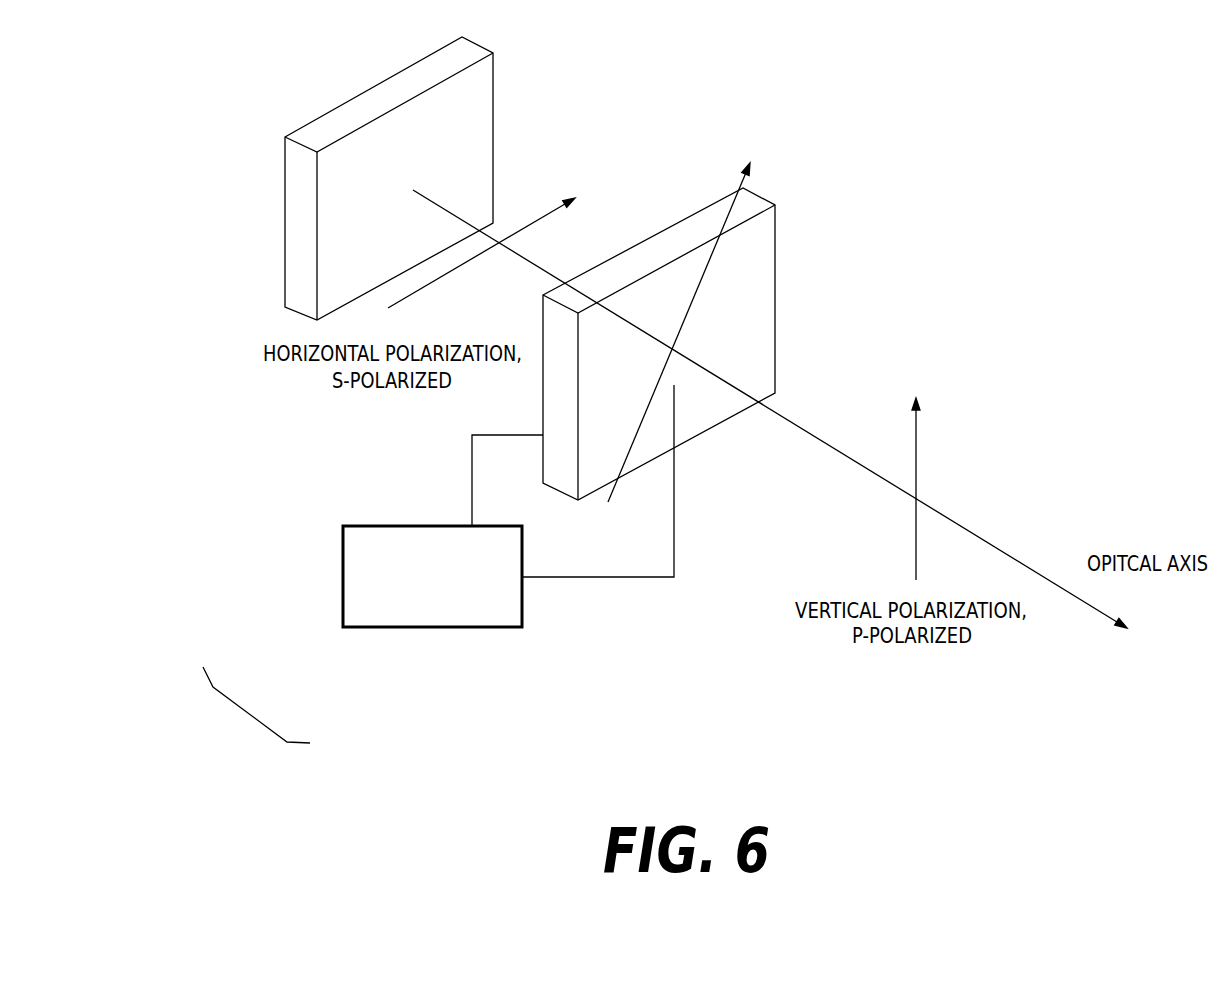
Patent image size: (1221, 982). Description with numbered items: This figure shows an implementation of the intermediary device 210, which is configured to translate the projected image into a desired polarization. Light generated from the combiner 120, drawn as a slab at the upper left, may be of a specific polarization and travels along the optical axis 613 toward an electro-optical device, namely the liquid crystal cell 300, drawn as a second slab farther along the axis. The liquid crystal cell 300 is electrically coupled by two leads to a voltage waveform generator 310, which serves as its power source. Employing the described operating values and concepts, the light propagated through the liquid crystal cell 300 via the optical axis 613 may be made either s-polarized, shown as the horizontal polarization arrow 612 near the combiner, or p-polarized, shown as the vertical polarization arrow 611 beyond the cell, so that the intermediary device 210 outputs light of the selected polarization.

The combiner 120 is at (493, 102).
The s-polarized (horizontal) light 612 is at (543, 215).
The liquid crystal cell 300 is at (760, 308).
The p-polarized (vertical) light 611 is at (918, 450).
The optical axis 613 is at (1093, 610).
The voltage waveform generator 310 is at (442, 628).
The intermediary device 210 is at (250, 718).